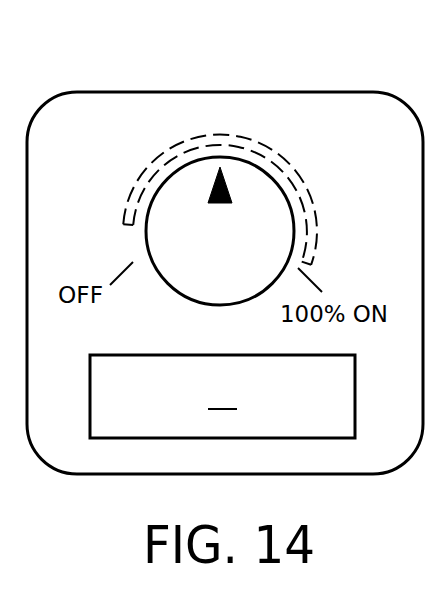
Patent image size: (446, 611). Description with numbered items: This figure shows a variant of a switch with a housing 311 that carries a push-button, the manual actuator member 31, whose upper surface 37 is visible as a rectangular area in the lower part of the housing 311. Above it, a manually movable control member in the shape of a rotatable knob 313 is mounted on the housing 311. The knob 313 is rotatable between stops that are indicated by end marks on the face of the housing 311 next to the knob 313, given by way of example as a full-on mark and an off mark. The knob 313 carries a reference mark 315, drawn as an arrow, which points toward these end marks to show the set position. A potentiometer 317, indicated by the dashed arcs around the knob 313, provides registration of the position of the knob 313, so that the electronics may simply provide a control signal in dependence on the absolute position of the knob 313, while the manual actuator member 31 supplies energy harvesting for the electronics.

The housing 311 is at (88, 117).
The rotatable knob 313 is at (258, 188).
The reference mark 315 is at (221, 204).
The potentiometer 317 is at (317, 223).
The manual actuator member 31 is at (128, 385).
The upper surface 37 is at (222, 397).